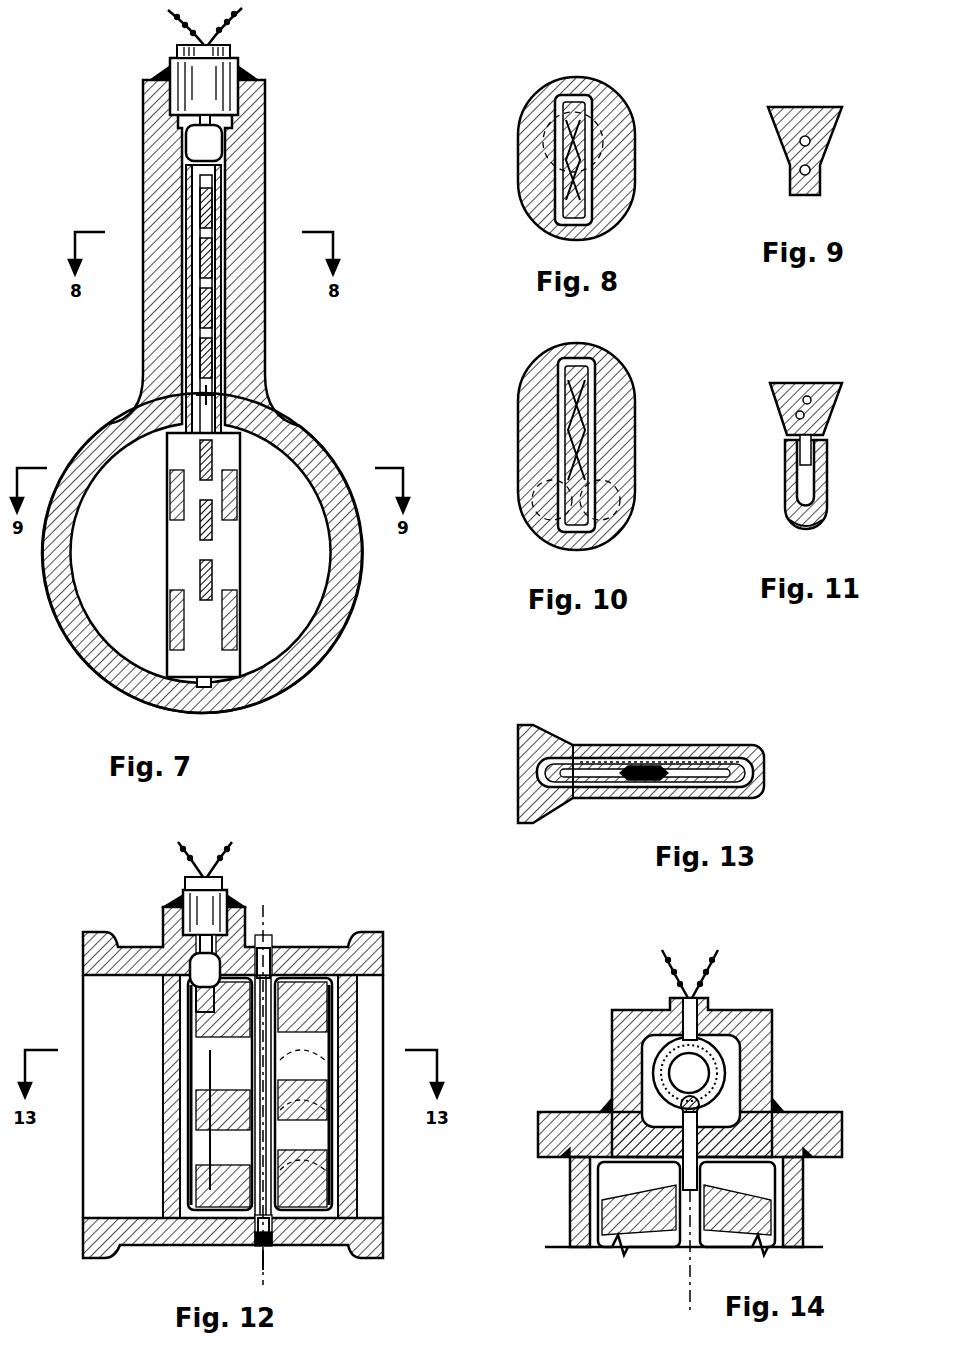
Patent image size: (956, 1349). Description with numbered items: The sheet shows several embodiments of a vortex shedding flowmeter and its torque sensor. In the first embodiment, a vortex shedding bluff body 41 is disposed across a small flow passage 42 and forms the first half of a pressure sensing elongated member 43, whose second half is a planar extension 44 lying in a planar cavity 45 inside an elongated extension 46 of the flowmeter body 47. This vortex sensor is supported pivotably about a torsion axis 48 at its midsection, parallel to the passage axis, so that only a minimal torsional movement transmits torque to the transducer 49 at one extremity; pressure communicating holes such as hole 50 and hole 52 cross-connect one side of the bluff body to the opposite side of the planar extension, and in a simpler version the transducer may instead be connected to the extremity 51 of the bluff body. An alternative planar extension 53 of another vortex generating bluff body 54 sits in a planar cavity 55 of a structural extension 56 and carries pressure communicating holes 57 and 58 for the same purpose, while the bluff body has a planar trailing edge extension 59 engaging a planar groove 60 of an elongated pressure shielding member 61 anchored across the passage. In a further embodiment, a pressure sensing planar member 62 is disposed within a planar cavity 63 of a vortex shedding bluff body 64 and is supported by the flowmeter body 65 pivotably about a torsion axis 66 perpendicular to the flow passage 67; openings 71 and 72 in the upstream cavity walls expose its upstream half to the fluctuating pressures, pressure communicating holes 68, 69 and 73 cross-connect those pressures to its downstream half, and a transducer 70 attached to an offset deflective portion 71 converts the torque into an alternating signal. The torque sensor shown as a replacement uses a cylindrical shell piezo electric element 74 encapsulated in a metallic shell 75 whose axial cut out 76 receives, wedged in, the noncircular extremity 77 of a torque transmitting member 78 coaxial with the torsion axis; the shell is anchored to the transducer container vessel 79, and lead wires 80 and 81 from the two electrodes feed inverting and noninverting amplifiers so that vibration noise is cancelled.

In FIG. 7, the vortex shedding bluff body 41 is at (173, 570).
In FIG. 9, the vortex shedding bluff body 41 is at (808, 107).
In FIG. 7, the flow passage 42 is at (278, 617).
In FIG. 7, the pressure sensing elongated member 43 is at (222, 368).
In FIG. 7, the planar extension 44 is at (188, 238).
In FIG. 8, the planar extension 44 is at (580, 78).
In FIG. 7, the planar cavity 45 is at (178, 320).
In FIG. 8, the planar cavity 45 is at (632, 148).
In FIG. 7, the elongated extension 46 is at (240, 195).
In FIG. 8, the elongated extension 46 is at (535, 183).
In FIG. 7, the flowmeter body 47 is at (100, 440).
In FIG. 7, the torsion axis 48 is at (208, 388).
In FIG. 7, the transducer 49 is at (218, 97).
In FIG. 7, the pressure communicating hole 50 is at (206, 480).
In FIG. 8, the pressure communicating hole 50 is at (588, 190).
In FIG. 9, the pressure communicating hole 50 is at (790, 180).
In FIG. 7, the extremity of the bluff body 51 is at (204, 682).
In FIG. 8, the pressure communicating hole 52 is at (556, 146).
In FIG. 9, the pressure communicating hole 52 is at (812, 142).
In FIG. 10, the planar extension 53 is at (597, 490).
In FIG. 10, the vortex generating bluff body 54 is at (570, 418).
In FIG. 11, the vortex generating bluff body 54 is at (808, 383).
In FIG. 10, the planar cavity 55 is at (550, 485).
In FIG. 10, the structural extension 56 is at (612, 442).
In FIG. 10, the pressure communicating hole 57 is at (568, 391).
In FIG. 11, the pressure communicating hole 57 is at (797, 415).
In FIG. 10, the pressure communicating hole 58 is at (600, 393).
In FIG. 11, the pressure communicating hole 58 is at (832, 403).
In FIG. 11, the planar trailing edge extension 59 is at (826, 462).
In FIG. 11, the planar groove 60 is at (788, 473).
In FIG. 11, the elongated pressure shielding member 61 is at (820, 520).
In FIG. 13, the pressure sensing planar member 62 is at (540, 798).
In FIG. 12, the pressure sensing planar member 62 is at (207, 1140).
In FIG. 14, the pressure sensing planar member 62 is at (620, 1187).
In FIG. 13, the planar cavity 63 is at (568, 745).
In FIG. 12, the planar cavity 63 is at (210, 1187).
In FIG. 13, the vortex shedding bluff body 64 is at (518, 745).
In FIG. 12, the vortex shedding bluff body 64 is at (163, 1057).
In FIG. 12, the flowmeter body 65 is at (317, 948).
In FIG. 13, the torsion axis 66 is at (640, 748).
In FIG. 12, the torsion axis 66 is at (267, 1260).
In FIG. 14, the torsion axis 66 is at (688, 1272).
In FIG. 12, the flow passage 67 is at (132, 1140).
In FIG. 12, the pressure communicating hole 68 is at (300, 1143).
In FIG. 12, the pressure communicating hole 69 is at (310, 1185).
In FIG. 12, the transducer 70 is at (200, 918).
In FIG. 13, the deflective portion 71 is at (587, 745).
In FIG. 12, the deflective portion 71 is at (198, 1012).
In FIG. 13, the opening 72 is at (573, 800).
In FIG. 13, the pressure communicating hole 73 is at (697, 748).
In FIG. 14, the piezo electric element 74 is at (650, 1067).
In FIG. 14, the metallic circular cylindrical shell 75 is at (698, 1060).
In FIG. 14, the axial cut out 76 is at (612, 1081).
In FIG. 14, the extremity of noncircular cross section 77 is at (733, 1067).
In FIG. 14, the torque transmitting member 78 is at (792, 1112).
In FIG. 14, the transducer container vessel 79 is at (612, 1023).
In FIG. 14, the lead wire 80 is at (672, 972).
In FIG. 14, the lead wire 81 is at (712, 965).